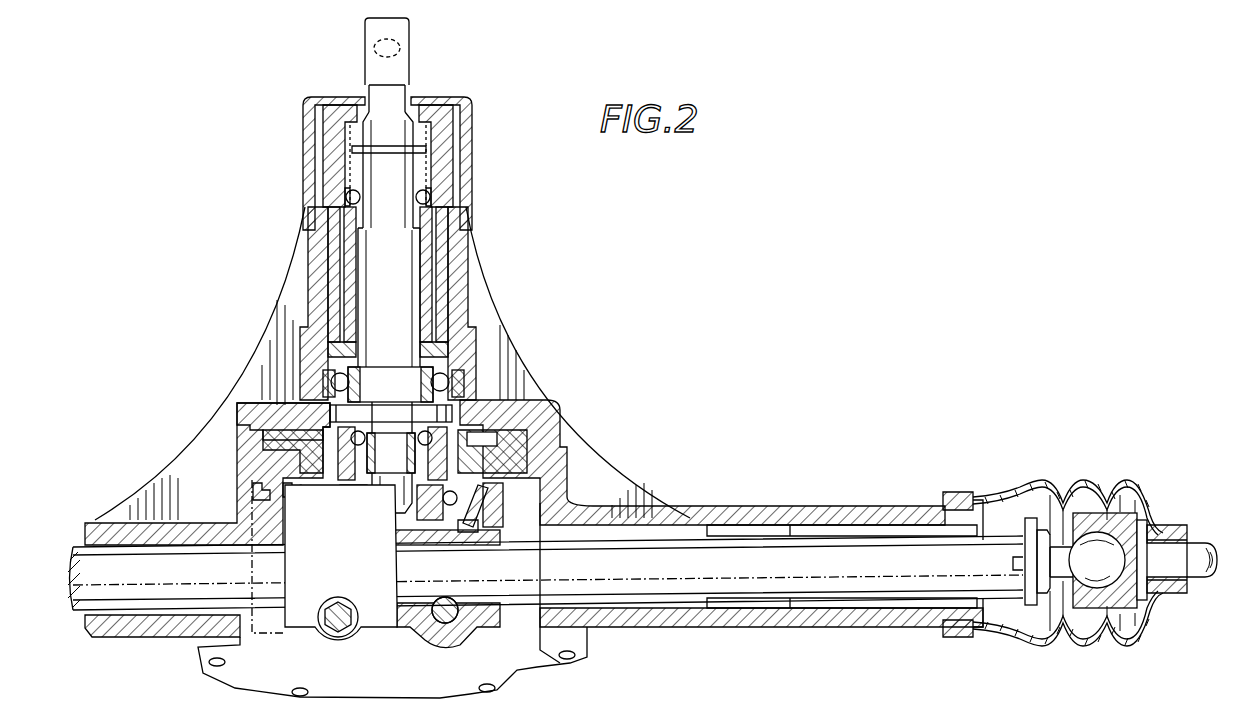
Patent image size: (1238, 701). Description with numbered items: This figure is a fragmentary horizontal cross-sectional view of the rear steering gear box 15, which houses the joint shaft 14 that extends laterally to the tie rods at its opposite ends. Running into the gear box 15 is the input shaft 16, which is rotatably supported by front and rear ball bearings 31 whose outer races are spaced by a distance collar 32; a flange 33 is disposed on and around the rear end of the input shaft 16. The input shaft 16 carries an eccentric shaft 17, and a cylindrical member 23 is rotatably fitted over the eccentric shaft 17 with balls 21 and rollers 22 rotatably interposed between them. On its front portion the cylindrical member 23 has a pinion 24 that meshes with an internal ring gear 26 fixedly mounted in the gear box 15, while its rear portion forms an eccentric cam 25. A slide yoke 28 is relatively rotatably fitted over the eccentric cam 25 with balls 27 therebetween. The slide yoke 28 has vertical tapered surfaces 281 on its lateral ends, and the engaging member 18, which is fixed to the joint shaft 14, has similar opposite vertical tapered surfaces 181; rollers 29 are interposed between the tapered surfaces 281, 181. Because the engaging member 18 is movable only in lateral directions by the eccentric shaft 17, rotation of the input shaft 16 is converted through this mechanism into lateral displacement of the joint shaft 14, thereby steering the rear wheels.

The joint shaft 14 is at (837, 583).
The rear steering gear box 15 is at (745, 522).
The input shaft 16 is at (405, 275).
The eccentric shaft 17 is at (395, 497).
The engaging member 18 is at (425, 546).
The vertical tapered surfaces 181 is at (310, 528).
The balls 21 is at (372, 430).
The rollers 22 is at (423, 495).
The cylindrical member 23 is at (427, 466).
The pinion 24 is at (460, 417).
The eccentric cam 25 is at (352, 512).
The internal ring gear 26 is at (258, 416).
The balls 27 is at (322, 515).
The slide yoke 28 is at (467, 478).
The vertical tapered surfaces 281 is at (300, 503).
The rollers 29 is at (298, 513).
The ball bearings 31 is at (431, 196).
The distance collar 32 is at (347, 268).
The flange 33 is at (462, 408).